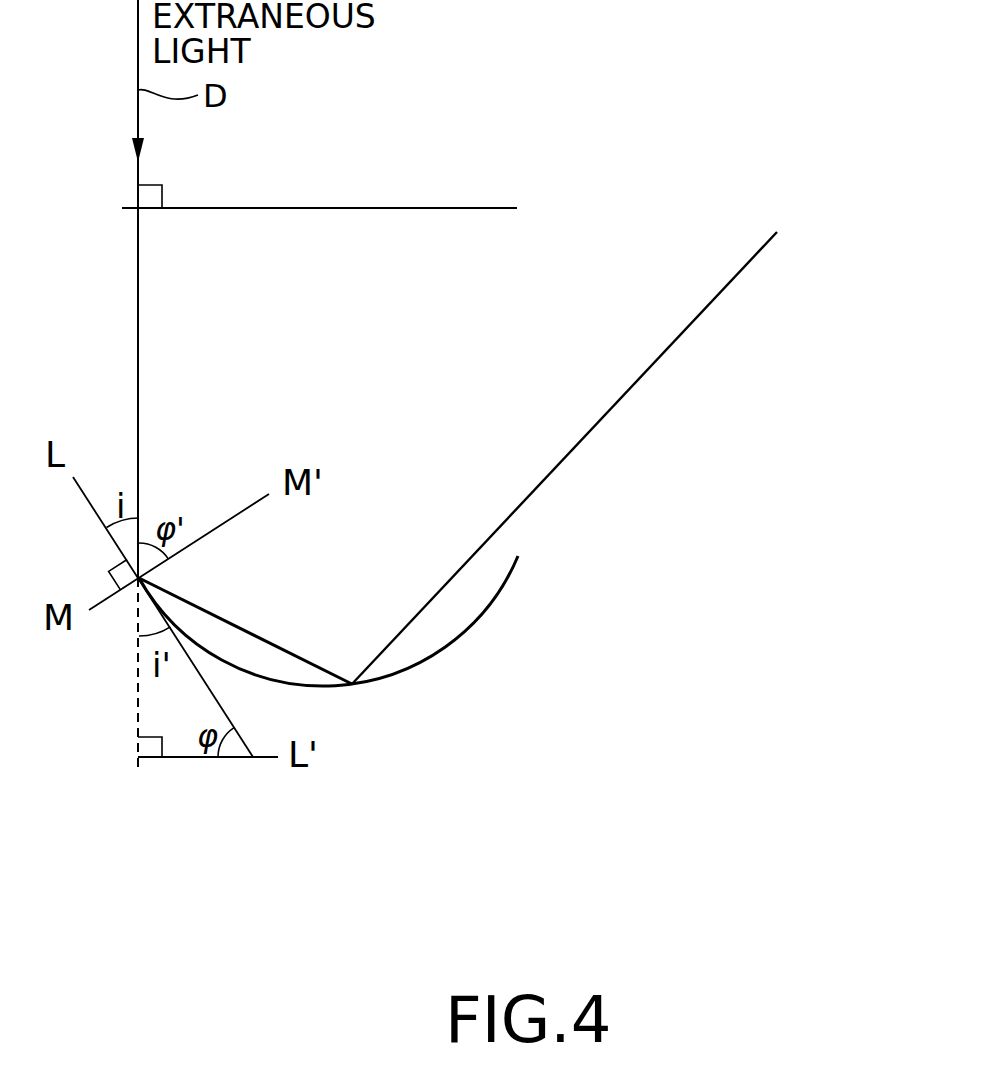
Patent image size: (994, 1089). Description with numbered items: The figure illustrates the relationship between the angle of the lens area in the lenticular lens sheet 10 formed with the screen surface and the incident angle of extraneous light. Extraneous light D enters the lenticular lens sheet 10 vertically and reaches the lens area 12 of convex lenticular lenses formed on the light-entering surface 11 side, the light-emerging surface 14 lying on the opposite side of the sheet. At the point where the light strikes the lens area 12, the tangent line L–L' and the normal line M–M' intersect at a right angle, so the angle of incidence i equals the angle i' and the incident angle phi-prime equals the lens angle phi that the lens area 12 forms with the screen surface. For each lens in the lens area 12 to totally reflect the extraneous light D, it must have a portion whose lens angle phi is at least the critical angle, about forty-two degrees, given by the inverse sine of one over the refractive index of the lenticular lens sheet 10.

The lenticular lens sheet 10 is at (730, 132).
The light-entering surface 11 is at (500, 593).
The lens area 12 is at (420, 640).
The light-emerging surface 14 is at (430, 207).